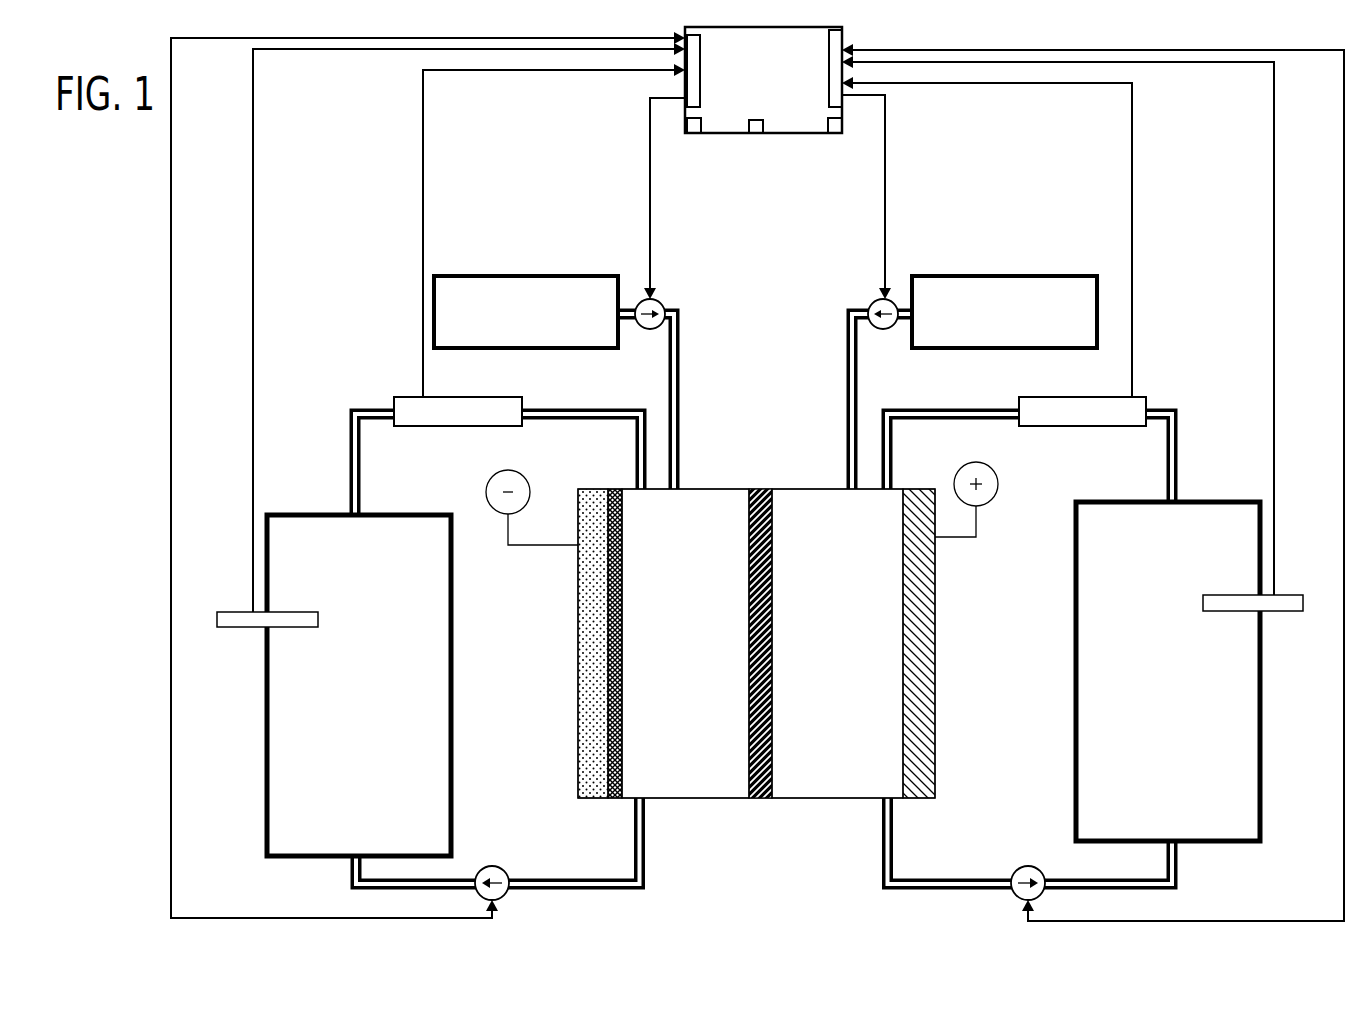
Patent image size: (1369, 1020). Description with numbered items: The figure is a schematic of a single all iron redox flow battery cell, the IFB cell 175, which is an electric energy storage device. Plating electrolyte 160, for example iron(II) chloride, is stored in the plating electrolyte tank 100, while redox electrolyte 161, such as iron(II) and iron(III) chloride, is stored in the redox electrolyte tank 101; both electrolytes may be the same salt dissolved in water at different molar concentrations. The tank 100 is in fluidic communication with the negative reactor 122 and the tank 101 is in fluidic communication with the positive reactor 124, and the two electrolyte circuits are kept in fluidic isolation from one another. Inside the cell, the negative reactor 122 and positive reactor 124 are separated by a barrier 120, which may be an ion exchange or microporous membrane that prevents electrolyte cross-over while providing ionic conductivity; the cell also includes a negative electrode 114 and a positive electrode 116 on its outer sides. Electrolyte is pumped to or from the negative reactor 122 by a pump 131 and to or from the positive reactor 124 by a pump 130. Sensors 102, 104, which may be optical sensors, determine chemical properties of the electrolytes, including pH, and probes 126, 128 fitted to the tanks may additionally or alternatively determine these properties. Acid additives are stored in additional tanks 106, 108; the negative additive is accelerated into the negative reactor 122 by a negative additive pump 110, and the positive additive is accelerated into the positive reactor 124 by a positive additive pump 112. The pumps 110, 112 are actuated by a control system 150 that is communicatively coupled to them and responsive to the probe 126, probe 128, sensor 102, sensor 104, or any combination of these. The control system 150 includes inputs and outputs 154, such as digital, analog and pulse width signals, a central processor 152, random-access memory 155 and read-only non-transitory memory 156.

The plating electrolyte tank 100 is at (332, 658).
The redox electrolyte tank 101 is at (1155, 658).
The sensor 102 is at (437, 424).
The sensor 104 is at (1062, 424).
The additional tank 106 is at (480, 323).
The additional tank 108 is at (983, 323).
The negative additive pump 110 is at (660, 332).
The positive additive pump 112 is at (882, 330).
The negative electrode 114 is at (579, 632).
The positive electrode 116 is at (935, 632).
The barrier 120 is at (760, 799).
The negative reactor 122 is at (666, 613).
The positive reactor 124 is at (828, 613).
The probe 126 is at (1290, 595).
The probe 128 is at (237, 612).
The pump 130 is at (1035, 866).
The pump 131 is at (496, 866).
The control system 150 is at (685, 31).
The central processor 152 is at (690, 134).
The inputs and outputs 154 is at (840, 33).
The random-access memory 155 is at (755, 134).
The read-only memory 156 is at (834, 134).
The plating electrolyte 160 is at (320, 692).
The redox electrolyte 161 is at (1208, 720).
The IFB cell 175 is at (762, 412).